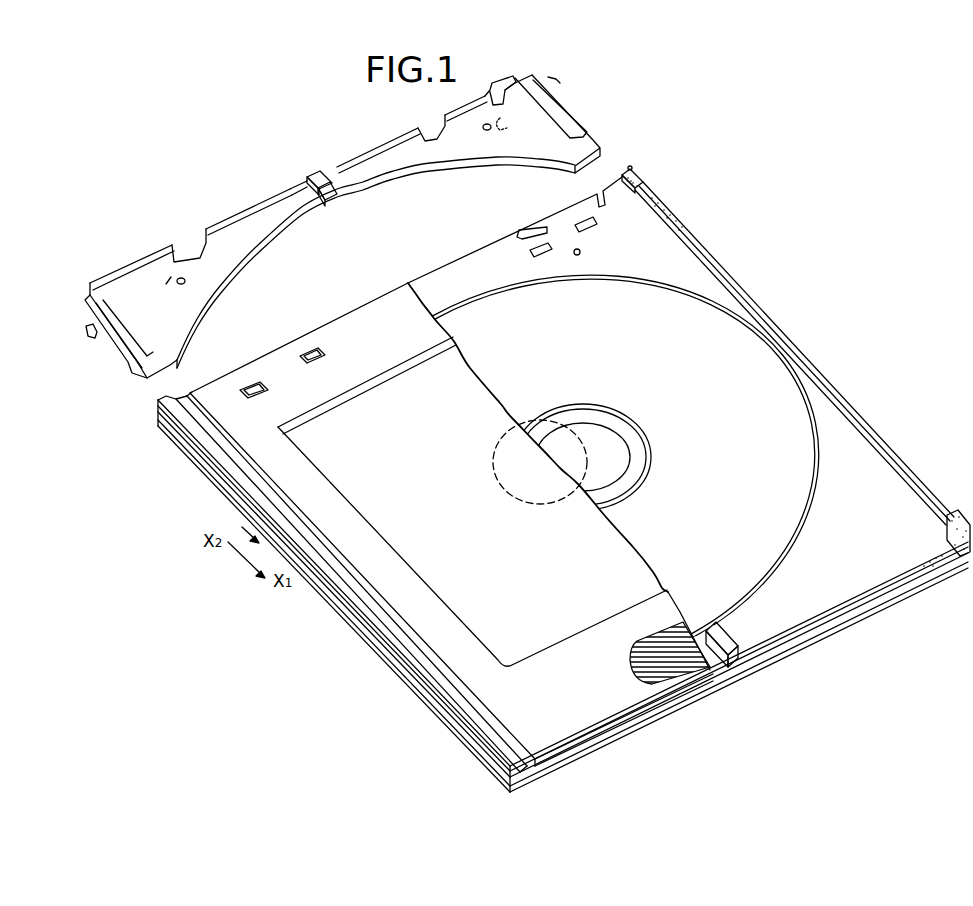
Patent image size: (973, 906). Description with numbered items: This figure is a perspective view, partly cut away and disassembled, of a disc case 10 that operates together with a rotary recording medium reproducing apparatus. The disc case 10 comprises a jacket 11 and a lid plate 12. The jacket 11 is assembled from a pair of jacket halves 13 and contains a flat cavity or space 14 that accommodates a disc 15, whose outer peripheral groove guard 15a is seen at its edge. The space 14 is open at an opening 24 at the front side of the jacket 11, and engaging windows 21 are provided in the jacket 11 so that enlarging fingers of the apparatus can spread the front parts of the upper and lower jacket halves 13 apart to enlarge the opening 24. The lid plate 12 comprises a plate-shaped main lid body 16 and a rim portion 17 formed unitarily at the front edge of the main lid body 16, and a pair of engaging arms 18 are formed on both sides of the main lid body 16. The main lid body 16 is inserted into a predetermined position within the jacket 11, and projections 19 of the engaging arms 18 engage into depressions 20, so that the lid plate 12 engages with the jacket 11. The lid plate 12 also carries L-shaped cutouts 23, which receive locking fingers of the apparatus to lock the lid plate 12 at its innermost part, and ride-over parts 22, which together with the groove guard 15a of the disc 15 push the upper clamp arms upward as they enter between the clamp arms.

The disc case 10 is at (684, 189).
The jacket 11 is at (368, 651).
The lid plate 12 is at (226, 213).
The jacket halves 13 is at (870, 606).
The space 14 is at (880, 462).
The disc 15 is at (800, 468).
The outer peripheral groove guard 15a is at (806, 521).
The main lid body 16 is at (436, 158).
The rim portion 17 is at (367, 150).
The engaging arms 18 is at (115, 347).
The projections 19 is at (86, 331).
The depressions 20 is at (640, 197).
The engaging windows 21 is at (306, 346).
The ride-over parts 22 is at (298, 185).
The L-shaped cutouts 23 is at (183, 250).
The opening 24 is at (416, 284).